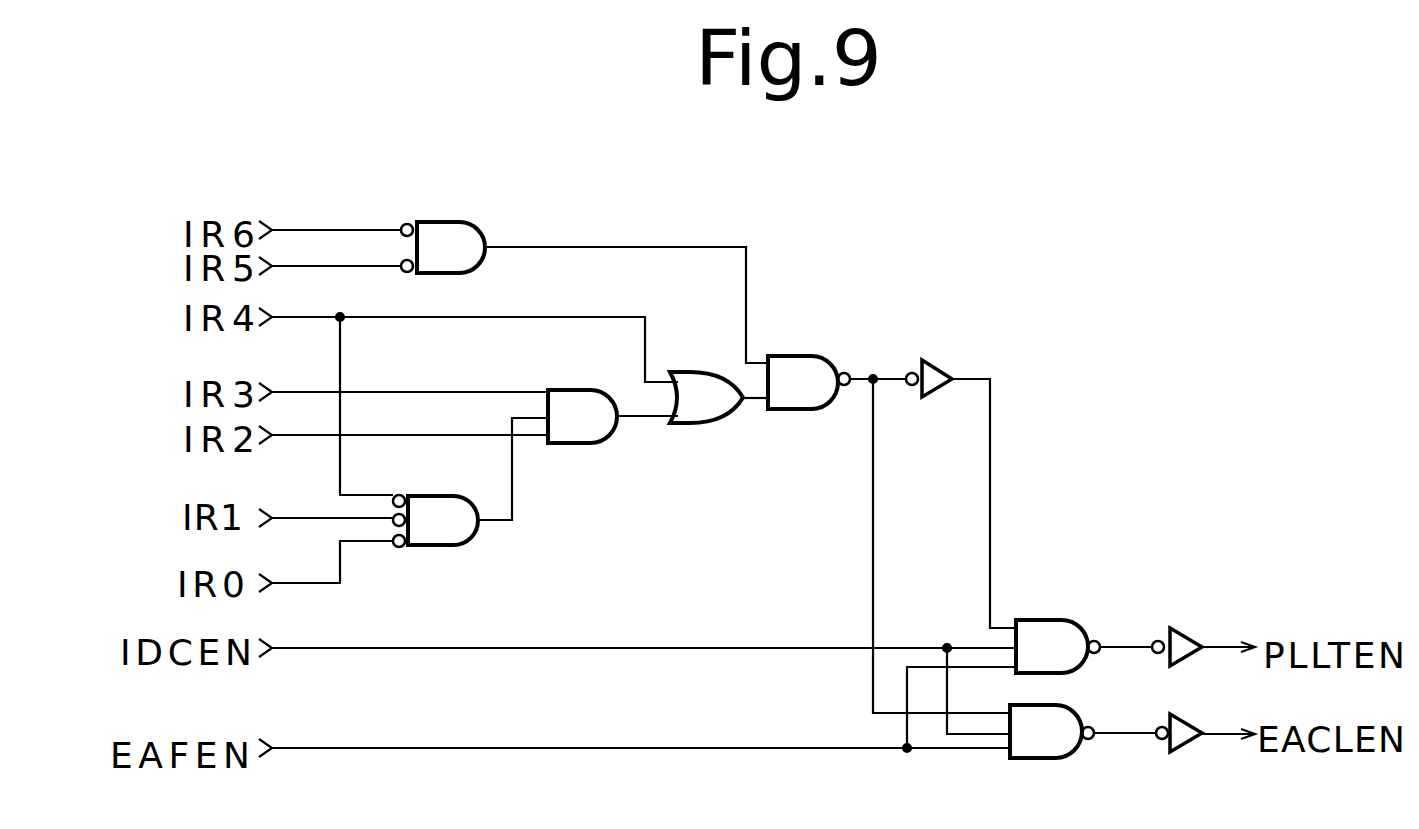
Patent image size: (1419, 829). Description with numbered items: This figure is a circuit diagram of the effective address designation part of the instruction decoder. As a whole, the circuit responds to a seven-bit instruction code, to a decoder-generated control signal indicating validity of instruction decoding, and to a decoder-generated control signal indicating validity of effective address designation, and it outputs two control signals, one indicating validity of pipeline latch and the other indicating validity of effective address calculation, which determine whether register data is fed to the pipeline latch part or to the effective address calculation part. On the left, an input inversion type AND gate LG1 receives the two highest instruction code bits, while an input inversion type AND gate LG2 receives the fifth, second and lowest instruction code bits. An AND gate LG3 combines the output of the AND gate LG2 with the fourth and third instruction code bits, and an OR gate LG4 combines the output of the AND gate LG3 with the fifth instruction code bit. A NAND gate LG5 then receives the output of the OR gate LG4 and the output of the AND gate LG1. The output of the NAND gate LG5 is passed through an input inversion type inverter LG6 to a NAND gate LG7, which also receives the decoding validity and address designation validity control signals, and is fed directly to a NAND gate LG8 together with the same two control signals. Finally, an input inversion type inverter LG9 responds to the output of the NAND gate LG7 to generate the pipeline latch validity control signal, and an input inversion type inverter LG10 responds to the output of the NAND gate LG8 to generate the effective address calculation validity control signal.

The input inversion type AND gate LG1 is at (449, 234).
The input inversion type AND gate LG2 is at (433, 540).
The AND gate LG3 is at (582, 425).
The OR gate LG4 is at (700, 412).
The NAND gate LG5 is at (797, 372).
The input inversion type inverter LG6 is at (938, 376).
The NAND gate LG7 is at (1053, 642).
The NAND gate LG8 is at (1042, 744).
The input inversion type inverter LG9 is at (1182, 636).
The input inversion type inverter LG10 is at (1188, 755).